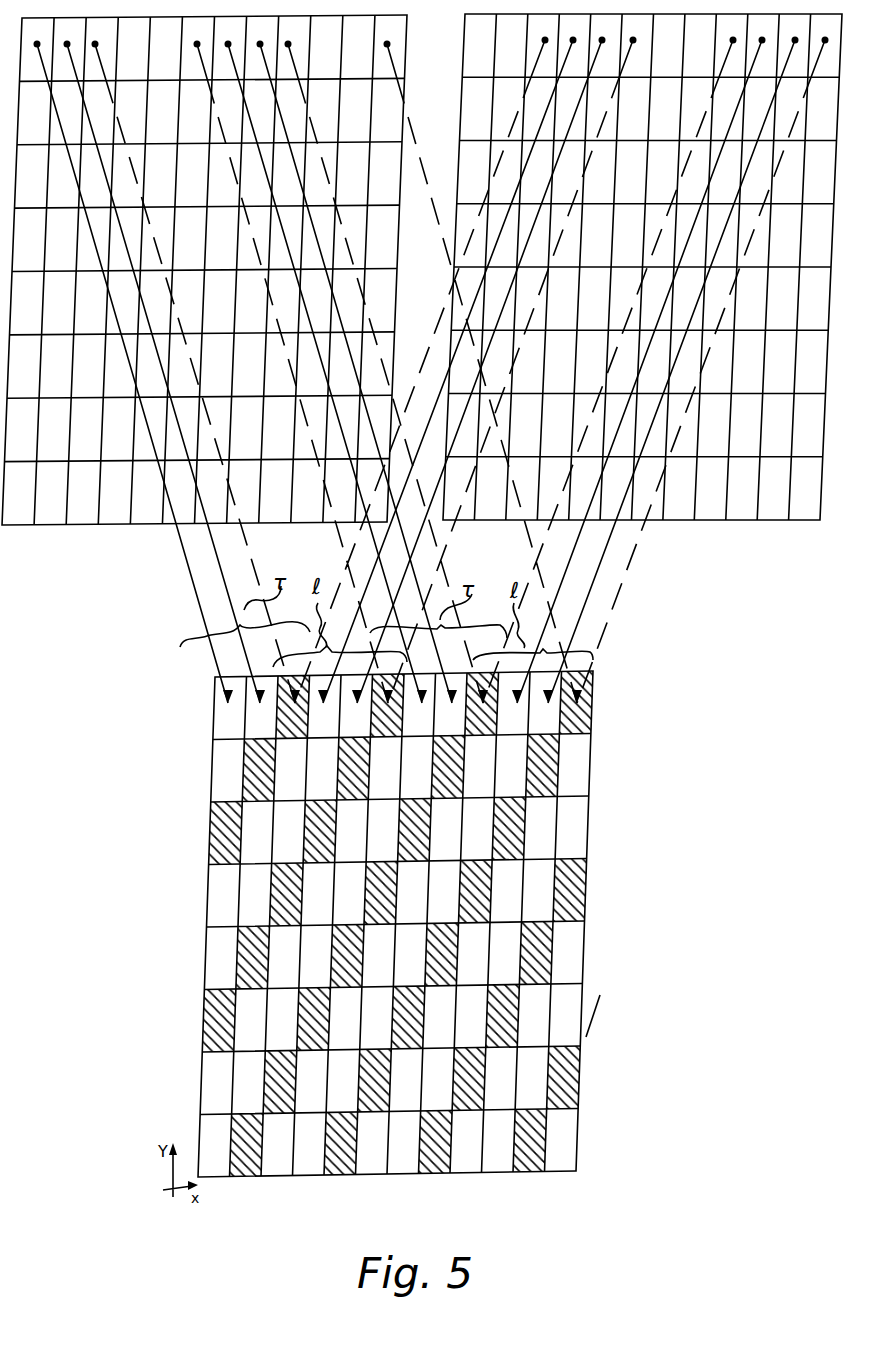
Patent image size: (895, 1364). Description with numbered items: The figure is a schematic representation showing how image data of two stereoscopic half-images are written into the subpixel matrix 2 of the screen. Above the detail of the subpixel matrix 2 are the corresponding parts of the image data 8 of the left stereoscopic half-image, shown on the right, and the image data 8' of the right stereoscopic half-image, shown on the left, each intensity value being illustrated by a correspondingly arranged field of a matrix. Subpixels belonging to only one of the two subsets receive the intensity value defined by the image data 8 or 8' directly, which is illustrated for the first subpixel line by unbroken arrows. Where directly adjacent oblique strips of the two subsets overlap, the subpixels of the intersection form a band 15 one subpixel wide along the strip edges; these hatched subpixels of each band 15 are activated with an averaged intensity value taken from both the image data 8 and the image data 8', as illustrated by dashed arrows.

The image data of the right stereoscopic half-image 8' is at (204, 310).
The image data of the left stereoscopic half-image 8 is at (642, 310).
The subpixel matrix 2 is at (612, 806).
The band 15 is at (200, 855).